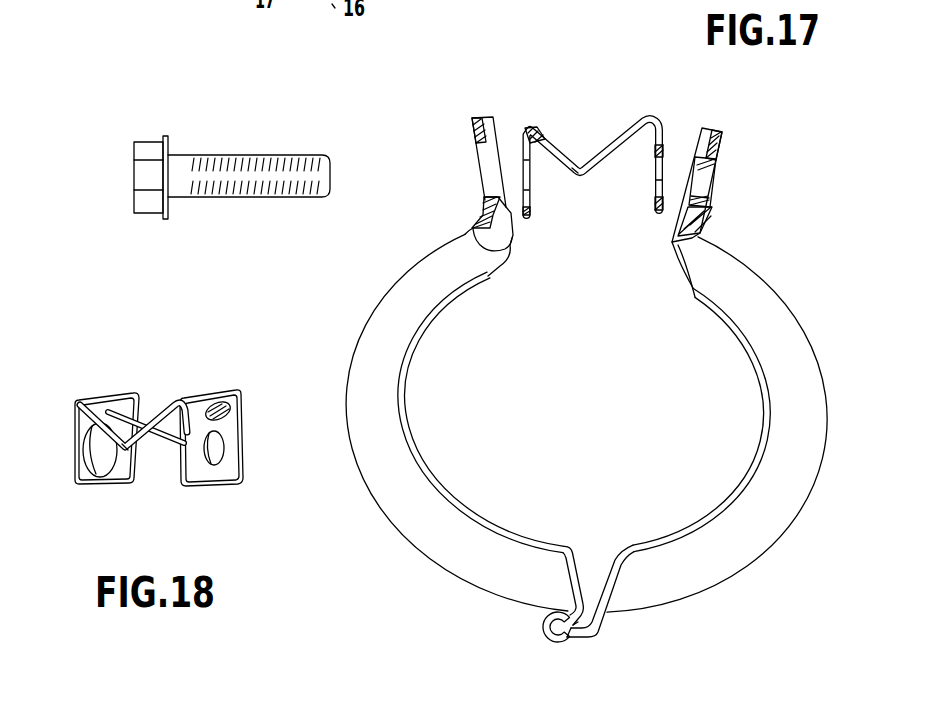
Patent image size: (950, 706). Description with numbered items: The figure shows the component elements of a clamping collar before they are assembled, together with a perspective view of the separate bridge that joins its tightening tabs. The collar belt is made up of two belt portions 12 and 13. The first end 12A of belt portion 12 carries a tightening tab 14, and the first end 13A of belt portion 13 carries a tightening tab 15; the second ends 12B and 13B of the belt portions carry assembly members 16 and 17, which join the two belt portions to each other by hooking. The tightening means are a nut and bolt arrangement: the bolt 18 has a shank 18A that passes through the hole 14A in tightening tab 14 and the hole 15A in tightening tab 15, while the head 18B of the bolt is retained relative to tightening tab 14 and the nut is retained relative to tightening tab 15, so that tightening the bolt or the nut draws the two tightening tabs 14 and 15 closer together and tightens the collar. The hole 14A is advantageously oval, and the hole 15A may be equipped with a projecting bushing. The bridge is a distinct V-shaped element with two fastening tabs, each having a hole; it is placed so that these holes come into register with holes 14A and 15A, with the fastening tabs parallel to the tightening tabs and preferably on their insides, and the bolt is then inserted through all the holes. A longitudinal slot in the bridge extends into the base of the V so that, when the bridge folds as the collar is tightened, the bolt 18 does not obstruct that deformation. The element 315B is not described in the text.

The belt portion 12 is at (388, 348).
The first end of belt portion 12A is at (461, 242).
The second end of belt portion 12B is at (507, 578).
The belt portion 13 is at (780, 346).
The first end of belt portion 13A is at (713, 260).
The second end of belt portion 13B is at (652, 583).
The tightening tab 14 is at (497, 215).
The hole 14A is at (487, 160).
The tightening tab 15 is at (703, 128).
The hole 15A is at (710, 178).
The assembly member 16 is at (572, 638).
The assembly member 17 is at (548, 630).
The bolt 18 is at (223, 184).
The shank 18A is at (267, 184).
The head 18B is at (133, 170).
The slot edge 315B is at (710, 188).